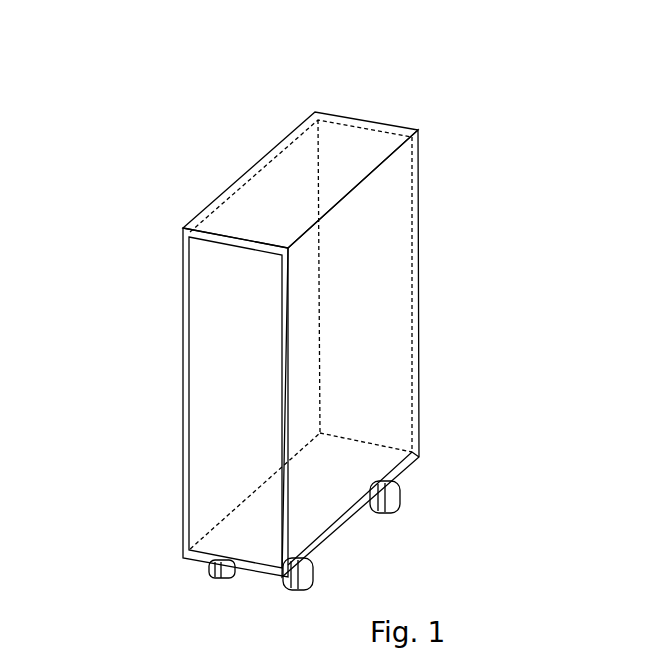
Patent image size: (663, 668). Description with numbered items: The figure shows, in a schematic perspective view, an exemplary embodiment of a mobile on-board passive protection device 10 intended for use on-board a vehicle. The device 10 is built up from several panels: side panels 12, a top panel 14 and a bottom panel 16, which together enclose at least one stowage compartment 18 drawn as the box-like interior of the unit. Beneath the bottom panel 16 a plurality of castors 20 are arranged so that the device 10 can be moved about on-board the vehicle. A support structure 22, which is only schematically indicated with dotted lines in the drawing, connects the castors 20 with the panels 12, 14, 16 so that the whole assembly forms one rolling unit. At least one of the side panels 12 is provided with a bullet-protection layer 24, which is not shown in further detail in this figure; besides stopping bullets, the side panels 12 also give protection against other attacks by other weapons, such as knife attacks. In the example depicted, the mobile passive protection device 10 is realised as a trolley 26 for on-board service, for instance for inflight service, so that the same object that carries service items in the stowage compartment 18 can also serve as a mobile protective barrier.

The mobile on-board passive protection device 10 is at (324, 345).
The side panels 12 is at (373, 260).
The top panel 14 is at (254, 181).
The bottom panel 16 is at (360, 533).
The stowage compartment 18 is at (243, 388).
The castors 20 is at (212, 577).
The support structure 22 is at (187, 287).
The bullet-protection layer 24 is at (373, 390).
The trolley 26 is at (287, 110).